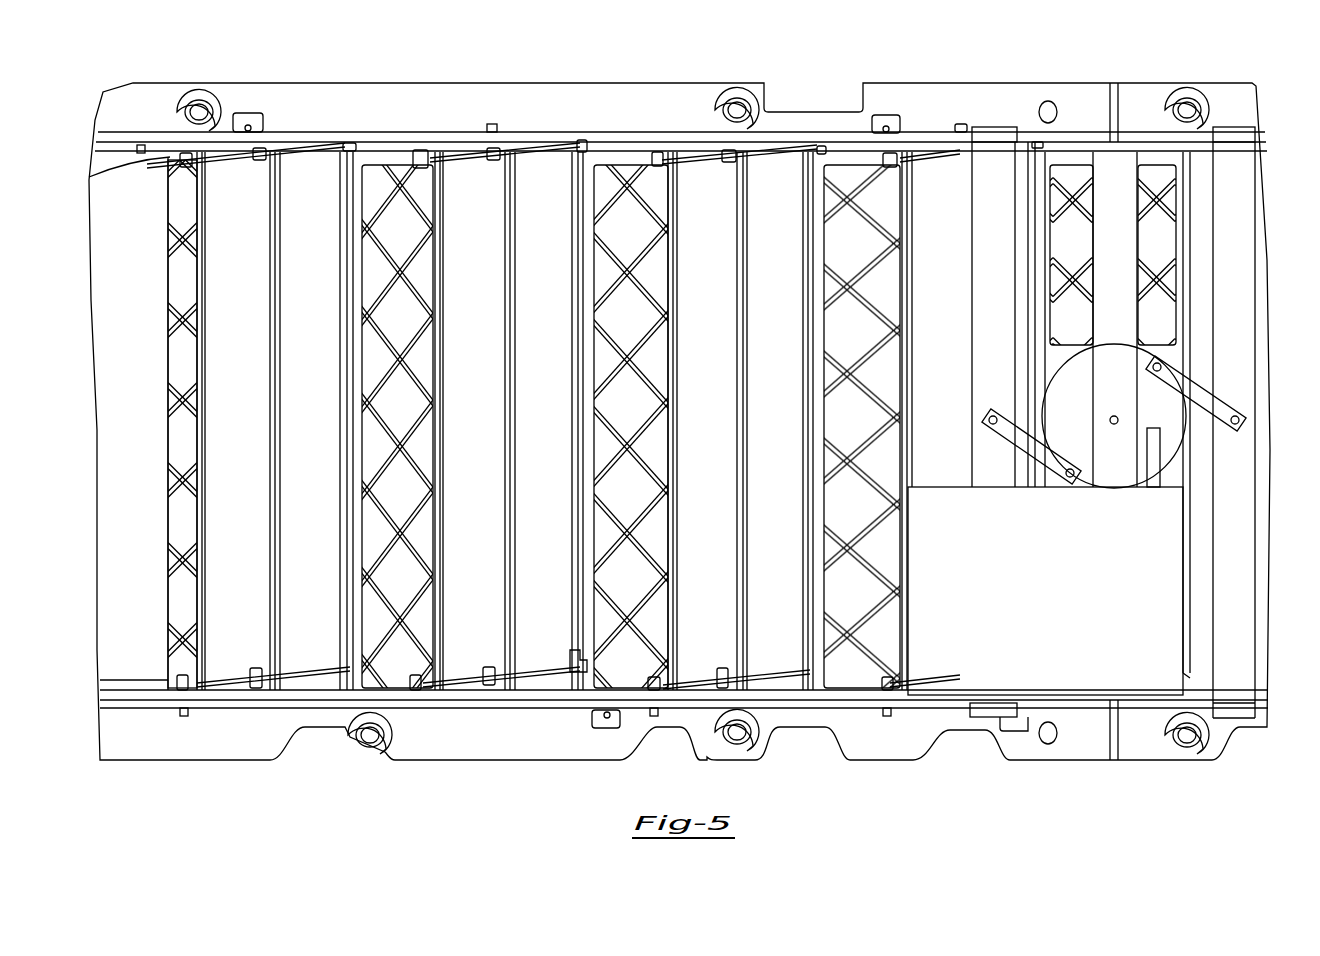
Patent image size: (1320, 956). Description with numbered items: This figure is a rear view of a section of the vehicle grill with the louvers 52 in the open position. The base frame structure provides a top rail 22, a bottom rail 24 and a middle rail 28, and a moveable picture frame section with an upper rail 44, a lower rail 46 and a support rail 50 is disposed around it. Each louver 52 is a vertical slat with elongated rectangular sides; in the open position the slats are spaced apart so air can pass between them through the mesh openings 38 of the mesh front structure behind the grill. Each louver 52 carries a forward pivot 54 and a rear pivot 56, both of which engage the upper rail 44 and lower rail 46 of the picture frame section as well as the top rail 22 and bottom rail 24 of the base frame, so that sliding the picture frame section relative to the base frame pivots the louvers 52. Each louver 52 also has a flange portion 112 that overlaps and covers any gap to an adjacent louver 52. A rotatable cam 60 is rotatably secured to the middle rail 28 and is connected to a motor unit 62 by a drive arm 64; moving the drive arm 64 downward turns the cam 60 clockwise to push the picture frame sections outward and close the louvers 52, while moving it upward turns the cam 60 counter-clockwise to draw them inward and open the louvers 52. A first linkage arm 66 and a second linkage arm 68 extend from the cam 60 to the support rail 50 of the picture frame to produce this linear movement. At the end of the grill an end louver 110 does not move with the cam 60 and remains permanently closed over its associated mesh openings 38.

The top rail 22 is at (657, 145).
The bottom rail 24 is at (203, 695).
The middle rail 28 is at (1103, 157).
The mesh openings 38 is at (848, 247).
The upper rail 44 is at (632, 132).
The lower rail 46 is at (138, 705).
The support rail 50 is at (993, 157).
The louvers 52 is at (760, 655).
The forward pivot 54 is at (415, 155).
The rear pivot 56 is at (490, 125).
The rotatable cam 60 is at (1129, 469).
The motor unit 62 is at (1072, 599).
The drive arm 64 is at (1157, 452).
The first linkage arm 66 is at (997, 412).
The second linkage arm 68 is at (1215, 405).
The end louvers 110 is at (142, 605).
The flange portion 112 is at (582, 653).